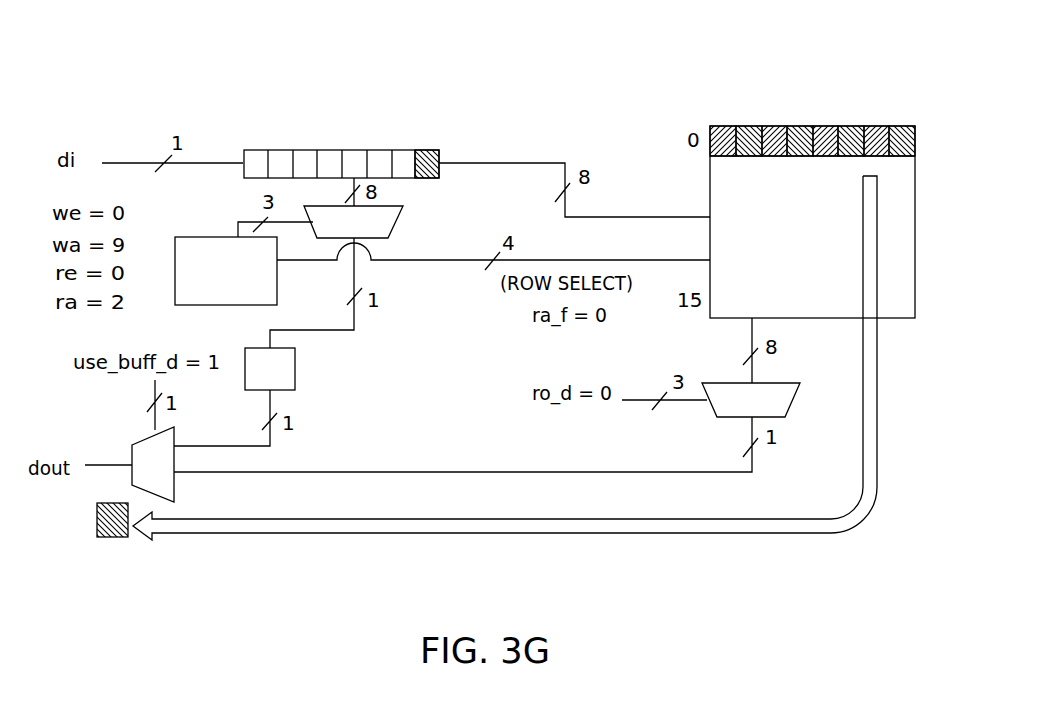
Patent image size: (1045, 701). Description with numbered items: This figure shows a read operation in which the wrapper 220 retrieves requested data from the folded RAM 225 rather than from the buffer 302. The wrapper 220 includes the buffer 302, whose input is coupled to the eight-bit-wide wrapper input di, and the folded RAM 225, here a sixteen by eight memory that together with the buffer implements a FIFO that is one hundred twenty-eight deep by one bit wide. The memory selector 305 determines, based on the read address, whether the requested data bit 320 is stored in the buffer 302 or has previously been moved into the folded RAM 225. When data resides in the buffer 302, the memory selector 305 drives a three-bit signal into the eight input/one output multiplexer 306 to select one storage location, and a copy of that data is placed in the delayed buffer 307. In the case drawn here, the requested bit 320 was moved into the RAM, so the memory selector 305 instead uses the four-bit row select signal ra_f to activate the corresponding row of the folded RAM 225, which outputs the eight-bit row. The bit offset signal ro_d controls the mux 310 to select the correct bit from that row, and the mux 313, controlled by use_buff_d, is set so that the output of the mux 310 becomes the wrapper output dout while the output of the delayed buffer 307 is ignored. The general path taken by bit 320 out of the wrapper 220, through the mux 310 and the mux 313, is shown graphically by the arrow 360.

The wrapper 220 is at (492, 66).
The buffer 302 is at (341, 143).
The memory selector 305 is at (195, 237).
The multiplexer 306 is at (400, 217).
The delayed buffer 307 is at (332, 369).
The mux 310 is at (795, 400).
The mux 313 is at (174, 490).
The requested data bit 320 is at (875, 126).
The folded RAM 225 is at (813, 283).
The arrow 360 is at (808, 533).